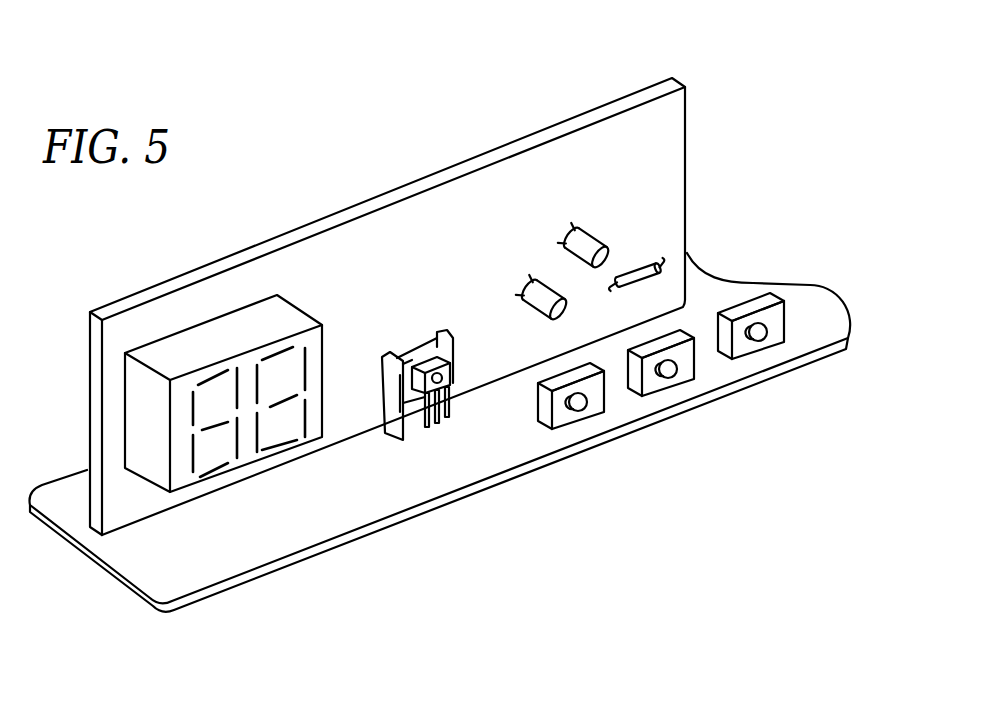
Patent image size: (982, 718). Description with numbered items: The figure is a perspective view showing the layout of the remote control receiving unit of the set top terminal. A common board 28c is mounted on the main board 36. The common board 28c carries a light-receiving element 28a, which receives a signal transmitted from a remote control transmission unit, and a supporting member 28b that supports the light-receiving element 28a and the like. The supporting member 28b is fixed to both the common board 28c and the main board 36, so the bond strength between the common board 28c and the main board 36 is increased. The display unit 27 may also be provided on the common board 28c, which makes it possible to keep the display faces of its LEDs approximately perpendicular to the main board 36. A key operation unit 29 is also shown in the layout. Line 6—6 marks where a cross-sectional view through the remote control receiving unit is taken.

The section line 6 is at (87, 477).
The display unit 27 is at (218, 328).
The light-receiving element 28a is at (455, 378).
The supporting member 28b is at (392, 433).
The common board 28c is at (650, 90).
The key operation unit 29 is at (748, 350).
The main board 36 is at (732, 290).